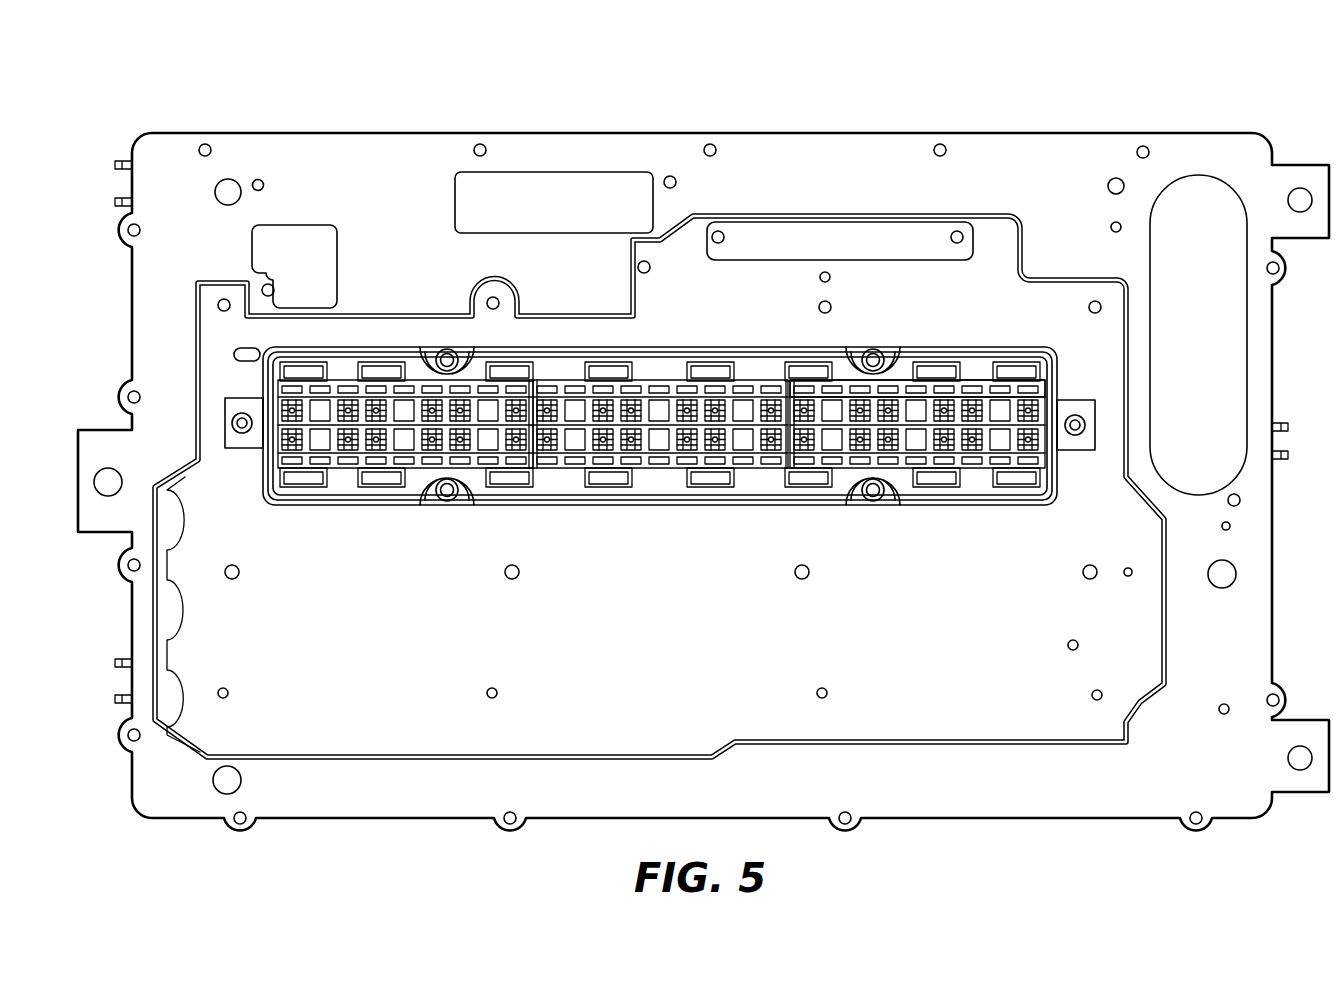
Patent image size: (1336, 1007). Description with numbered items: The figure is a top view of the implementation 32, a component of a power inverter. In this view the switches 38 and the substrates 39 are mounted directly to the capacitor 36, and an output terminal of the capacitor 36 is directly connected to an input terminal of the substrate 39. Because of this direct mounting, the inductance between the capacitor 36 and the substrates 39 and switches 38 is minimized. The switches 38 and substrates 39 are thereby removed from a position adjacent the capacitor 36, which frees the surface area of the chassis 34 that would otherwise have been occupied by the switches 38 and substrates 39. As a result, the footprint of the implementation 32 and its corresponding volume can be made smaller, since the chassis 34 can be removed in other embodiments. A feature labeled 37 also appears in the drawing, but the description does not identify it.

The implementation 32 is at (1117, 54).
The chassis 34 is at (368, 702).
The capacitor 36 is at (660, 331).
The latch tab 37 is at (928, 372).
The switches 38 is at (348, 386).
The substrates 39 is at (942, 383).